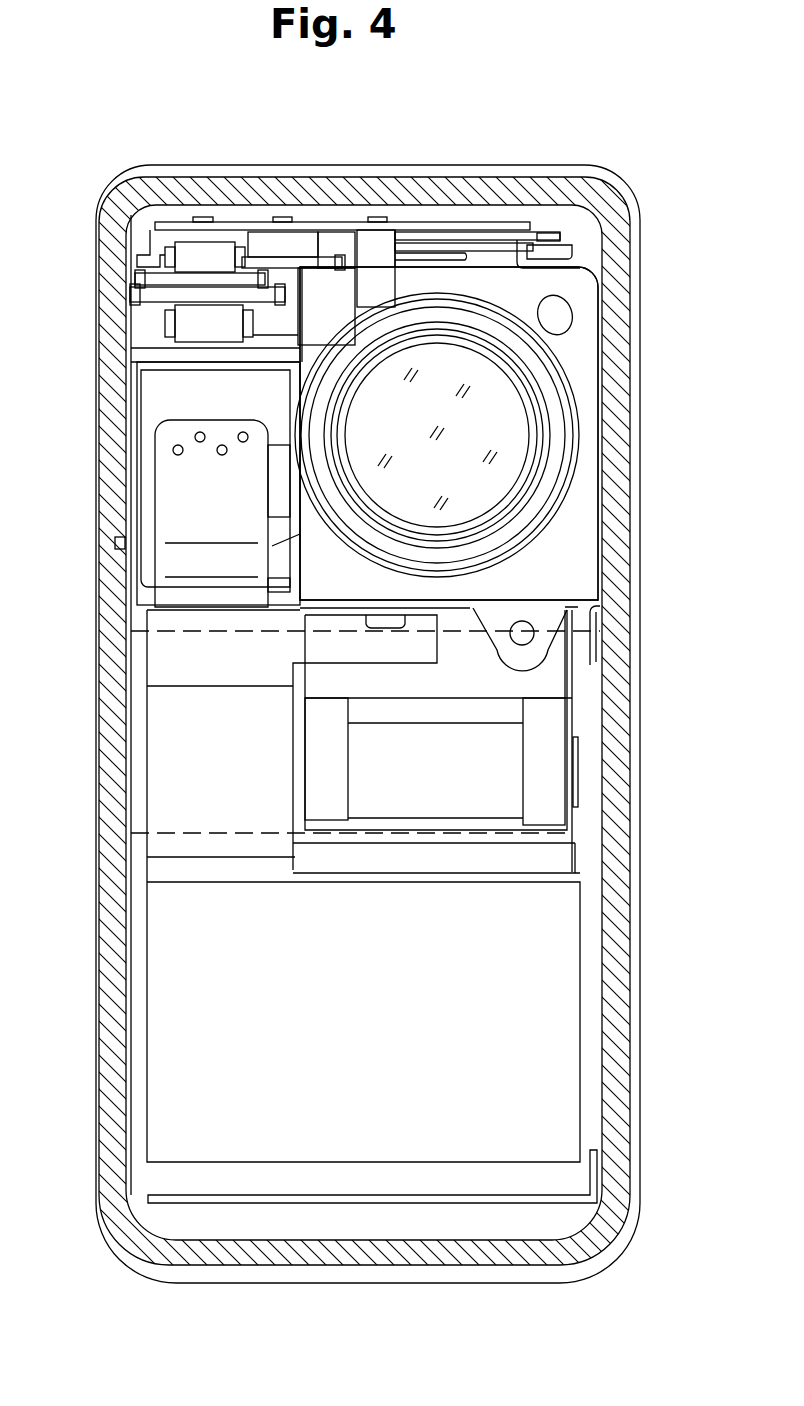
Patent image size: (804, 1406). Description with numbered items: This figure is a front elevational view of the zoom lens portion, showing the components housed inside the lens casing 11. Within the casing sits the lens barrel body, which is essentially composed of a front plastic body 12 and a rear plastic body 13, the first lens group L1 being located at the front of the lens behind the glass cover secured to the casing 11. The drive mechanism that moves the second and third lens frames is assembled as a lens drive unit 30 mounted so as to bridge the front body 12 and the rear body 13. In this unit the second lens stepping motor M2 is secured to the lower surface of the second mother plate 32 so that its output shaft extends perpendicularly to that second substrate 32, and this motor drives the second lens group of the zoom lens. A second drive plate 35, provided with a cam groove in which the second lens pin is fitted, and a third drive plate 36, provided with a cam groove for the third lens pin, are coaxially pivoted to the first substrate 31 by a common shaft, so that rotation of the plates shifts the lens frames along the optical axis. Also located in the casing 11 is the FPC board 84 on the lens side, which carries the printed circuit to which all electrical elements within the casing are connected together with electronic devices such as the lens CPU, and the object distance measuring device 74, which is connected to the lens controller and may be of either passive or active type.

The lens casing 11 is at (622, 888).
The front plastic body 12 is at (585, 356).
The rear plastic body 13 is at (449, 433).
The lens drive unit 30 is at (155, 217).
The first substrate 31 is at (233, 225).
The second mother plate 32 is at (150, 355).
The second drive plate 35 is at (490, 233).
The third drive plate 36 is at (538, 245).
The second lens stepping motor M2 is at (167, 400).
The first lens group L1 is at (497, 482).
The FPC board on the lens side 84 is at (187, 532).
The object distance measuring device 74 is at (450, 805).